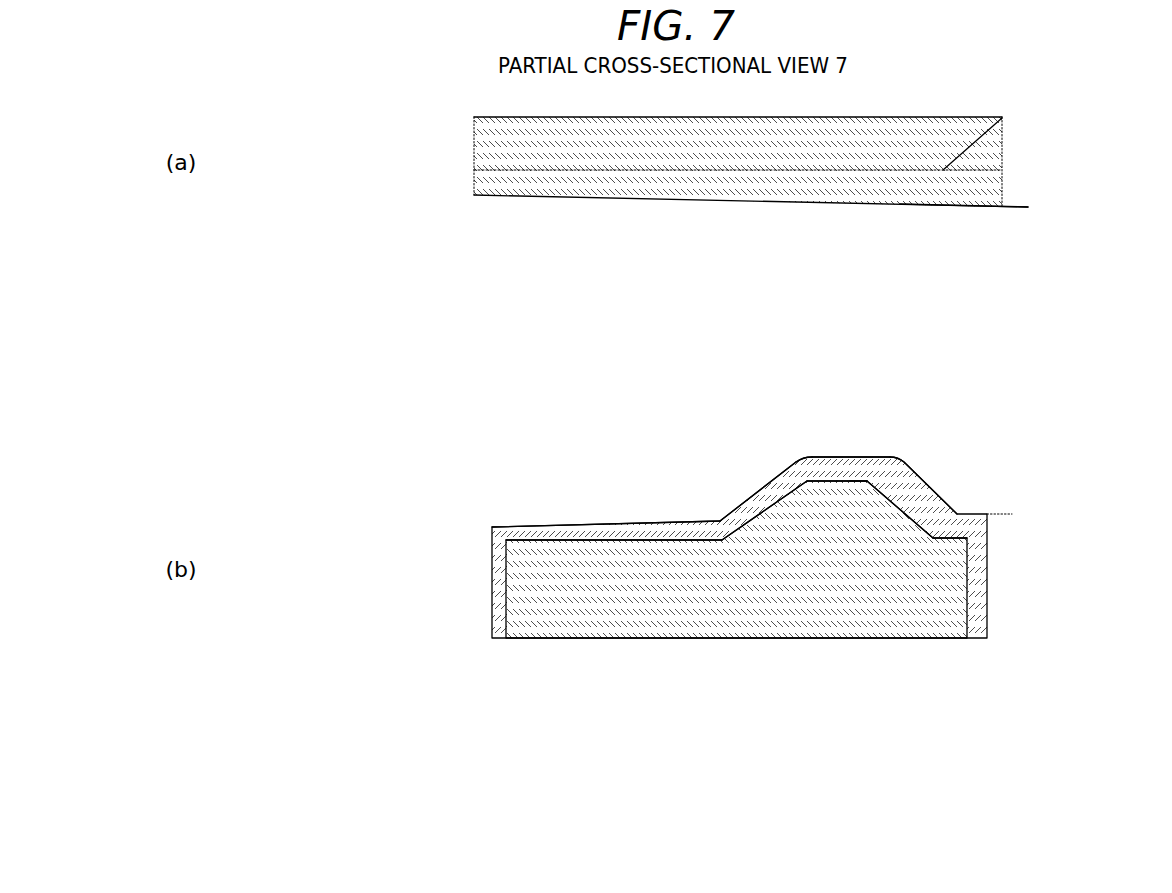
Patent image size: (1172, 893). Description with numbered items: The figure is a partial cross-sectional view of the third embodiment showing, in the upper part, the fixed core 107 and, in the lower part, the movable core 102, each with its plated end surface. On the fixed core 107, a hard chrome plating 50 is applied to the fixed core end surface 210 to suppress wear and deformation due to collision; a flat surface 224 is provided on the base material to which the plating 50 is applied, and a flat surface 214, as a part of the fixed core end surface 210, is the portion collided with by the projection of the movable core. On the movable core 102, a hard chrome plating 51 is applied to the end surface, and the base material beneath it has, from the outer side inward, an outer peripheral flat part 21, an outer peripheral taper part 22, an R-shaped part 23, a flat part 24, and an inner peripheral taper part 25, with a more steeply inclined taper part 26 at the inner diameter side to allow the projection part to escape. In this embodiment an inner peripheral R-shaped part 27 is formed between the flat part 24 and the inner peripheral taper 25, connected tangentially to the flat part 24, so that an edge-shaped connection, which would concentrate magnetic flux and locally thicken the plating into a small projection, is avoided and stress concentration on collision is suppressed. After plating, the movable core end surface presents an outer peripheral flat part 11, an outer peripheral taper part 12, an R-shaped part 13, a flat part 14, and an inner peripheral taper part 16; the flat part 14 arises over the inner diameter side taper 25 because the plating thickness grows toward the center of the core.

The fixed core 107 is at (483, 152).
The hard chrome plating 50 is at (492, 182).
The fixed core end surface 210 is at (527, 196).
The flat surface 224 is at (1002, 120).
The flat surface 214 is at (948, 208).
The hard chrome plating 51 is at (487, 563).
The movable core 102 is at (503, 628).
The outer peripheral flat part 11 is at (620, 523).
The outer peripheral taper part 12 is at (732, 507).
The R-shaped part 13 is at (800, 458).
The flat part 14 is at (843, 452).
The inner peripheral taper part 16 is at (913, 468).
The outer peripheral flat part 21 is at (640, 547).
The outer peripheral taper part 22 is at (758, 517).
The R-shaped part 23 is at (807, 483).
The flat part 24 is at (841, 482).
The inner peripheral taper part 25 is at (873, 490).
The taper part 26 is at (923, 522).
The inner peripheral R-shaped part 27 is at (861, 483).